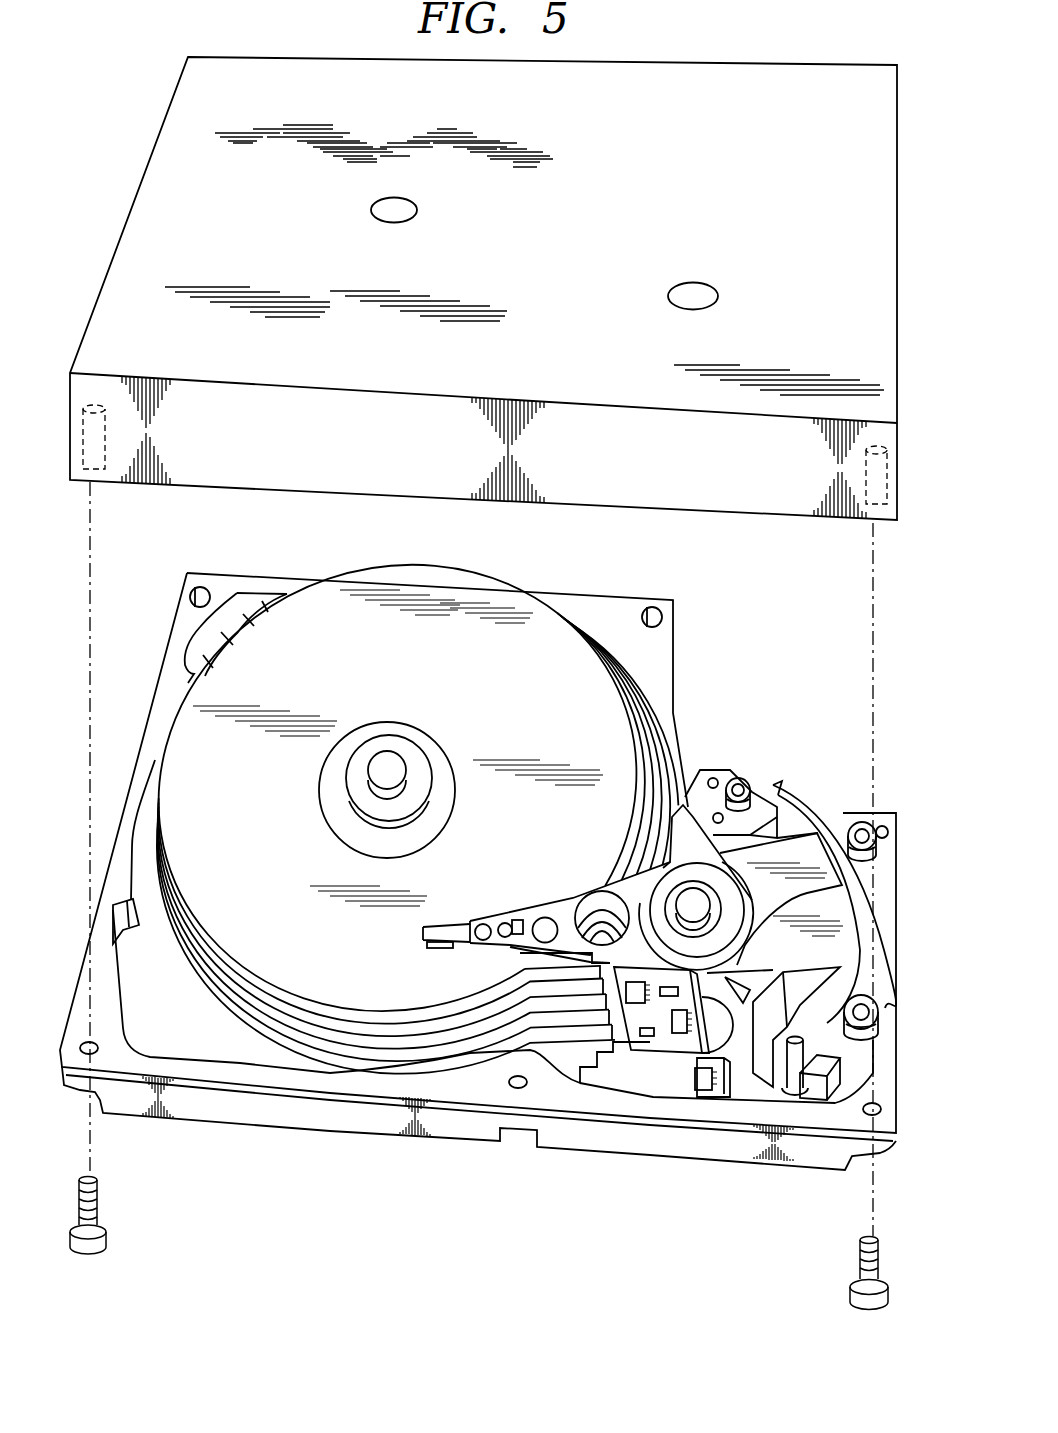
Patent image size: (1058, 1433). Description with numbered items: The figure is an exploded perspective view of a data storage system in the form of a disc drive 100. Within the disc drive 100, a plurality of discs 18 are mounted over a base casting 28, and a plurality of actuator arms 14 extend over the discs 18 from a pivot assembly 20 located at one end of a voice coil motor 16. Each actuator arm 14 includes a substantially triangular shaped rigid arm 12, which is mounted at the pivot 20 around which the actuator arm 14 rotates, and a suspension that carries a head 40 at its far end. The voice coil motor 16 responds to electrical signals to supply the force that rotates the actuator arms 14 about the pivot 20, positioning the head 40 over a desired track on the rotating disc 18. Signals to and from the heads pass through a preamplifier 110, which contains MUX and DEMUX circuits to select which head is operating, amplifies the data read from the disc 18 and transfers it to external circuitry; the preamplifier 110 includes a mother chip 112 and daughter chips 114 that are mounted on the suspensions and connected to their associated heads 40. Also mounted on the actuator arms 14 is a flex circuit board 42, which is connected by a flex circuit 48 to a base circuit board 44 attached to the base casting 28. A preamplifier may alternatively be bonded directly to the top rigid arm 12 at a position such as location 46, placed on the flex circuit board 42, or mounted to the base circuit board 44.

The disc drive 100 is at (400, 1234).
The base casting 28 is at (278, 1118).
The disc 18 is at (343, 577).
The rigid arm 12 is at (573, 897).
The actuator arm 14 is at (613, 857).
The voice coil motor 16 is at (782, 883).
The pivot assembly 20 is at (696, 903).
The head 40 is at (412, 929).
The location 46 is at (518, 918).
The daughter chip 114 is at (443, 951).
The preamplifier 110 is at (455, 962).
The flex circuit board 42 is at (650, 1046).
The base circuit board 44 is at (659, 1078).
The mother chip 112 is at (686, 1040).
The flex circuit 48 is at (748, 1030).